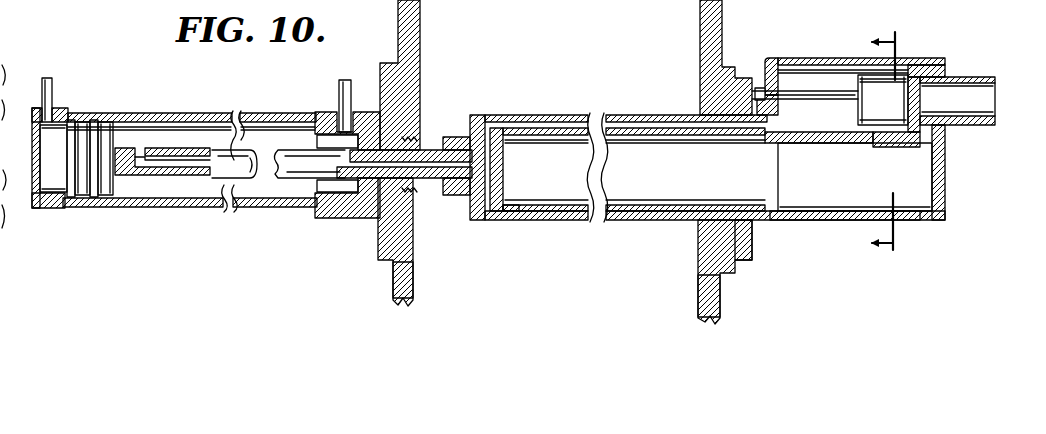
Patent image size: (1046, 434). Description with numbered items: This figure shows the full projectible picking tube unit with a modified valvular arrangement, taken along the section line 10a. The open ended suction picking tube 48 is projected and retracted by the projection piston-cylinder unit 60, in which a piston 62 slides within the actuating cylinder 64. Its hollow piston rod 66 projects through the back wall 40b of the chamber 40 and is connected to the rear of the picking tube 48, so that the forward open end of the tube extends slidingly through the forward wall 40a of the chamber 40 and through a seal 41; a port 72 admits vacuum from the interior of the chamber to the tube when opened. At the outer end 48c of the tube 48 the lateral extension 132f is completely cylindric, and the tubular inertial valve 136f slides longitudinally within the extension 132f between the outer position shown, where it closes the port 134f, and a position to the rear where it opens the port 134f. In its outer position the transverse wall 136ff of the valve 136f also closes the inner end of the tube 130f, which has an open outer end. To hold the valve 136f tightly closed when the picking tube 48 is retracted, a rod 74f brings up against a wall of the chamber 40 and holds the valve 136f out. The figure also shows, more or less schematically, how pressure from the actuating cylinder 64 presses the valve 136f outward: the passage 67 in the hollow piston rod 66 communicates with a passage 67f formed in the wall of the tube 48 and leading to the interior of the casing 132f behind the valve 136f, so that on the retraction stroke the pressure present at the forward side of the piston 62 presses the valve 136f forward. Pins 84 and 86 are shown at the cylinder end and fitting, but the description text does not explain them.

The section line 10a- 10a is at (876, 142).
The chamber 40 is at (422, 92).
The forward wall 40a is at (719, 303).
The back wall 40b is at (450, 257).
The seal 41 is at (753, 248).
The picking tube 48 is at (641, 219).
The outer end of tube 48 48c is at (813, 219).
The piston-cylinder unit 60 is at (300, 213).
The piston 62 is at (106, 197).
The cylinder 64 is at (194, 109).
The piston rod 66 is at (266, 174).
The passage 67 is at (161, 176).
The passage 67f is at (572, 115).
The port 72 is at (544, 216).
The rod 74f is at (801, 98).
The pin 84 is at (339, 90).
The pin 86 is at (53, 88).
The tube 130f is at (968, 127).
The lateral extension 132f is at (837, 59).
The port 134f is at (887, 133).
The tubular inertial valve 136f is at (921, 57).
The transverse wall 136ff is at (926, 104).